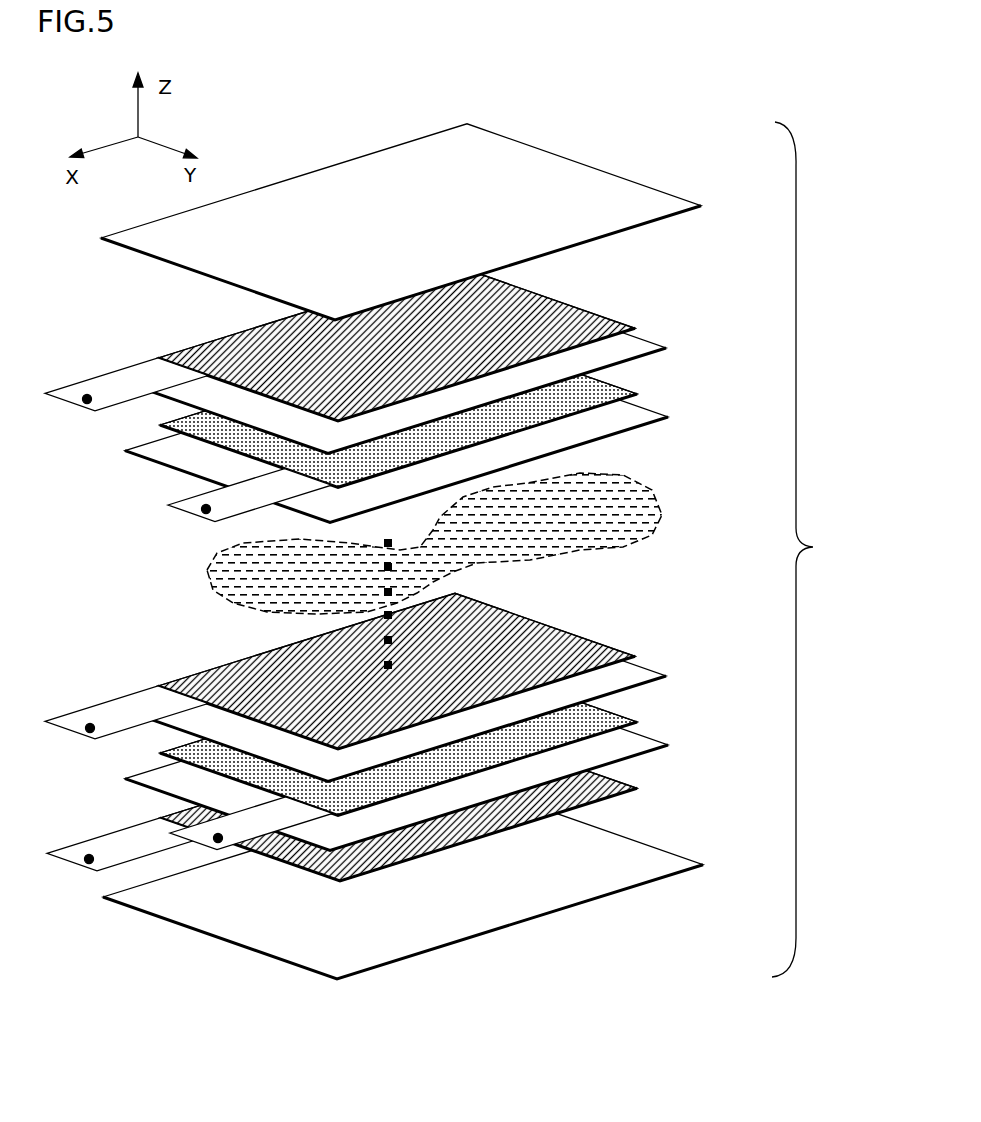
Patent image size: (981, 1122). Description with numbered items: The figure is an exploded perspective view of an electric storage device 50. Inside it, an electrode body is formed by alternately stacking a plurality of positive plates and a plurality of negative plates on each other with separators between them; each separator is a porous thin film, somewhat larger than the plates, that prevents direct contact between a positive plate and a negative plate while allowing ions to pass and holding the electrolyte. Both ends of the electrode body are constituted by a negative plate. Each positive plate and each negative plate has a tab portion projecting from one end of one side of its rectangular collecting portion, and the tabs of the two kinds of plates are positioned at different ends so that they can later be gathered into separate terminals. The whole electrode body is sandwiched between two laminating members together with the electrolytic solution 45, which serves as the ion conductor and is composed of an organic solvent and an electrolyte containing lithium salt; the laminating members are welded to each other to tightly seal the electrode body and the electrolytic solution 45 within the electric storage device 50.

The electrolytic solution 45 is at (623, 475).
The electric storage device 50 is at (816, 549).